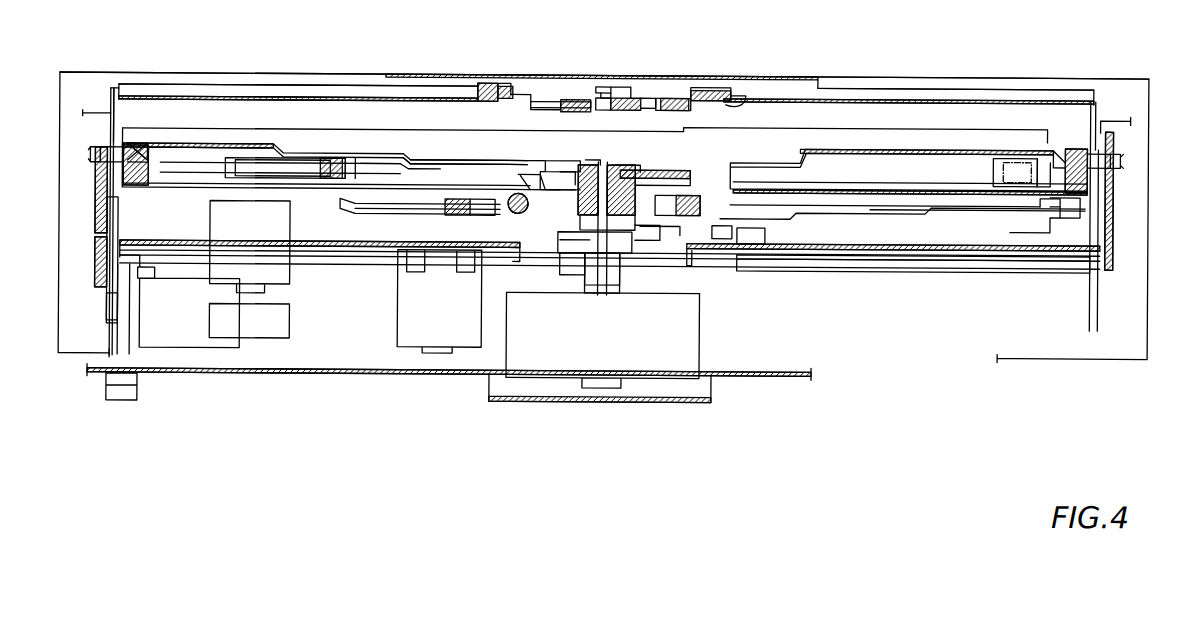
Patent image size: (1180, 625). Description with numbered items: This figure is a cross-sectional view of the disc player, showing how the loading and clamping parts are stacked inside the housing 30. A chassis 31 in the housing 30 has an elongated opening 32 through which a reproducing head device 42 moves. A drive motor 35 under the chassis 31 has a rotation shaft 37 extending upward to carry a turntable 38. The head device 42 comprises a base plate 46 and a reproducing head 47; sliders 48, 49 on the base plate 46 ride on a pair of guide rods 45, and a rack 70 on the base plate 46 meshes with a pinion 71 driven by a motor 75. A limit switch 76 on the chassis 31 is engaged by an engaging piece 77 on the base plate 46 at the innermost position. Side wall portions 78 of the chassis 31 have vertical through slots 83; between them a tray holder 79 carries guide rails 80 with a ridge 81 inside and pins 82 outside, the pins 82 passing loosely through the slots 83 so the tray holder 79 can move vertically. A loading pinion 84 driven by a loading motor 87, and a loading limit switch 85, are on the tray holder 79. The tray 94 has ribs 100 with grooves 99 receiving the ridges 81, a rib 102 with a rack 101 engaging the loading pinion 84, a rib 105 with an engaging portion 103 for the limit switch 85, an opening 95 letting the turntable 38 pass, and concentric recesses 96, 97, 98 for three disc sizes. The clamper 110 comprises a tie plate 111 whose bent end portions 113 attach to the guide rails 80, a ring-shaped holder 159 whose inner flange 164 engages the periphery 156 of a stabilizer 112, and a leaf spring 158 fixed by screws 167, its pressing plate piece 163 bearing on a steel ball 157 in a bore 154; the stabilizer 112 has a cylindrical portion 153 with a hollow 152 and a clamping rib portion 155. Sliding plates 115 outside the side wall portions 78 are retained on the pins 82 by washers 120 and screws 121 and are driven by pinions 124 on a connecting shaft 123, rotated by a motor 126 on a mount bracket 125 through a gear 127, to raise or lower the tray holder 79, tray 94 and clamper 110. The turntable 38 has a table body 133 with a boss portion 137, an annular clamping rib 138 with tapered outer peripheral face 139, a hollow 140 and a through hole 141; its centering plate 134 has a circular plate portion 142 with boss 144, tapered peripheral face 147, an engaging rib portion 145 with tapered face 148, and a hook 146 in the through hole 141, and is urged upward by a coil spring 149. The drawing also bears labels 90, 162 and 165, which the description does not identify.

The housing 30 is at (975, 75).
The chassis 31 is at (890, 270).
The elongated opening 32 is at (687, 265).
The drive motor 35 is at (700, 331).
The rotation shaft 37 is at (607, 285).
The turntable 38 is at (684, 160).
The reproducing head device 42 is at (662, 235).
The guide rod 45 is at (514, 200).
The base plate 46 is at (720, 220).
The reproducing head 47 is at (658, 195).
The slider 48 is at (488, 205).
The slider 49 is at (690, 205).
The rack 70 is at (470, 208).
The pinion 71 is at (453, 208).
The motor 75 is at (398, 312).
The limit switch 76 is at (765, 234).
The engaging piece 77 is at (722, 238).
The side wall portion 78 is at (82, 116).
The tray holder 79 is at (908, 208).
The guide rail 80 is at (133, 188).
The ridge 81 is at (130, 150).
The pin 82 is at (120, 165).
The through slot 83 is at (110, 95).
The loading pinion 84 is at (331, 160).
The loading limit switch 85 is at (993, 166).
The loading motor 87 is at (290, 282).
The drive assembly 90 is at (298, 165).
The tray 94 is at (243, 146).
The opening 95 is at (472, 161).
The largest recess 96 is at (203, 150).
The second largest recess 97 is at (405, 155).
The smallest recess 98 is at (444, 165).
The groove 99 is at (142, 148).
The rib 100 is at (150, 178).
The rack 101 is at (352, 160).
The rib 102 is at (366, 166).
The engaging portion 103 is at (1045, 200).
The rib 105 is at (1045, 156).
The clamper 110 is at (868, 98).
The tie plate 111 is at (927, 99).
The stabilizer 112 is at (560, 102).
The end portion 113 is at (112, 95).
The sliding plate 115 is at (95, 215).
The washer 120 is at (100, 156).
The screw 121 is at (90, 152).
The connecting shaft 123 is at (836, 258).
The pinion 124 is at (95, 258).
The mount bracket 125 is at (156, 281).
The motor 126 is at (198, 349).
The gear 127 is at (107, 300).
The table body 133 is at (607, 240).
The centering plate 134 is at (555, 165).
The boss portion 137 is at (575, 265).
The annular clamping rib portion 138 is at (530, 180).
The outer peripheral face 139 is at (525, 172).
The hollow 140 is at (665, 170).
The through hole 141 is at (575, 250).
The circular plate portion 142 is at (640, 165).
The boss 144 is at (620, 166).
The annular engaging rib portion 145 is at (588, 165).
The hook 146 is at (570, 240).
The peripheral face 147 is at (565, 172).
The outer peripheral face 148 is at (585, 160).
The coil spring 149 is at (648, 240).
The hollow 152 is at (612, 93).
The cylindrical portion 153 is at (620, 98).
The bore 154 is at (604, 93).
The clamping rib portion 155 is at (675, 98).
The periphery 156 is at (525, 96).
The steel ball 157 is at (575, 100).
The leaf spring 158 is at (648, 98).
The ring-shaped holder 159 is at (740, 88).
The seal 162 is at (505, 87).
The pressing plate piece 163 is at (600, 87).
The inner flange 164 is at (705, 88).
The seal 165 is at (500, 84).
The screw 167 is at (485, 84).